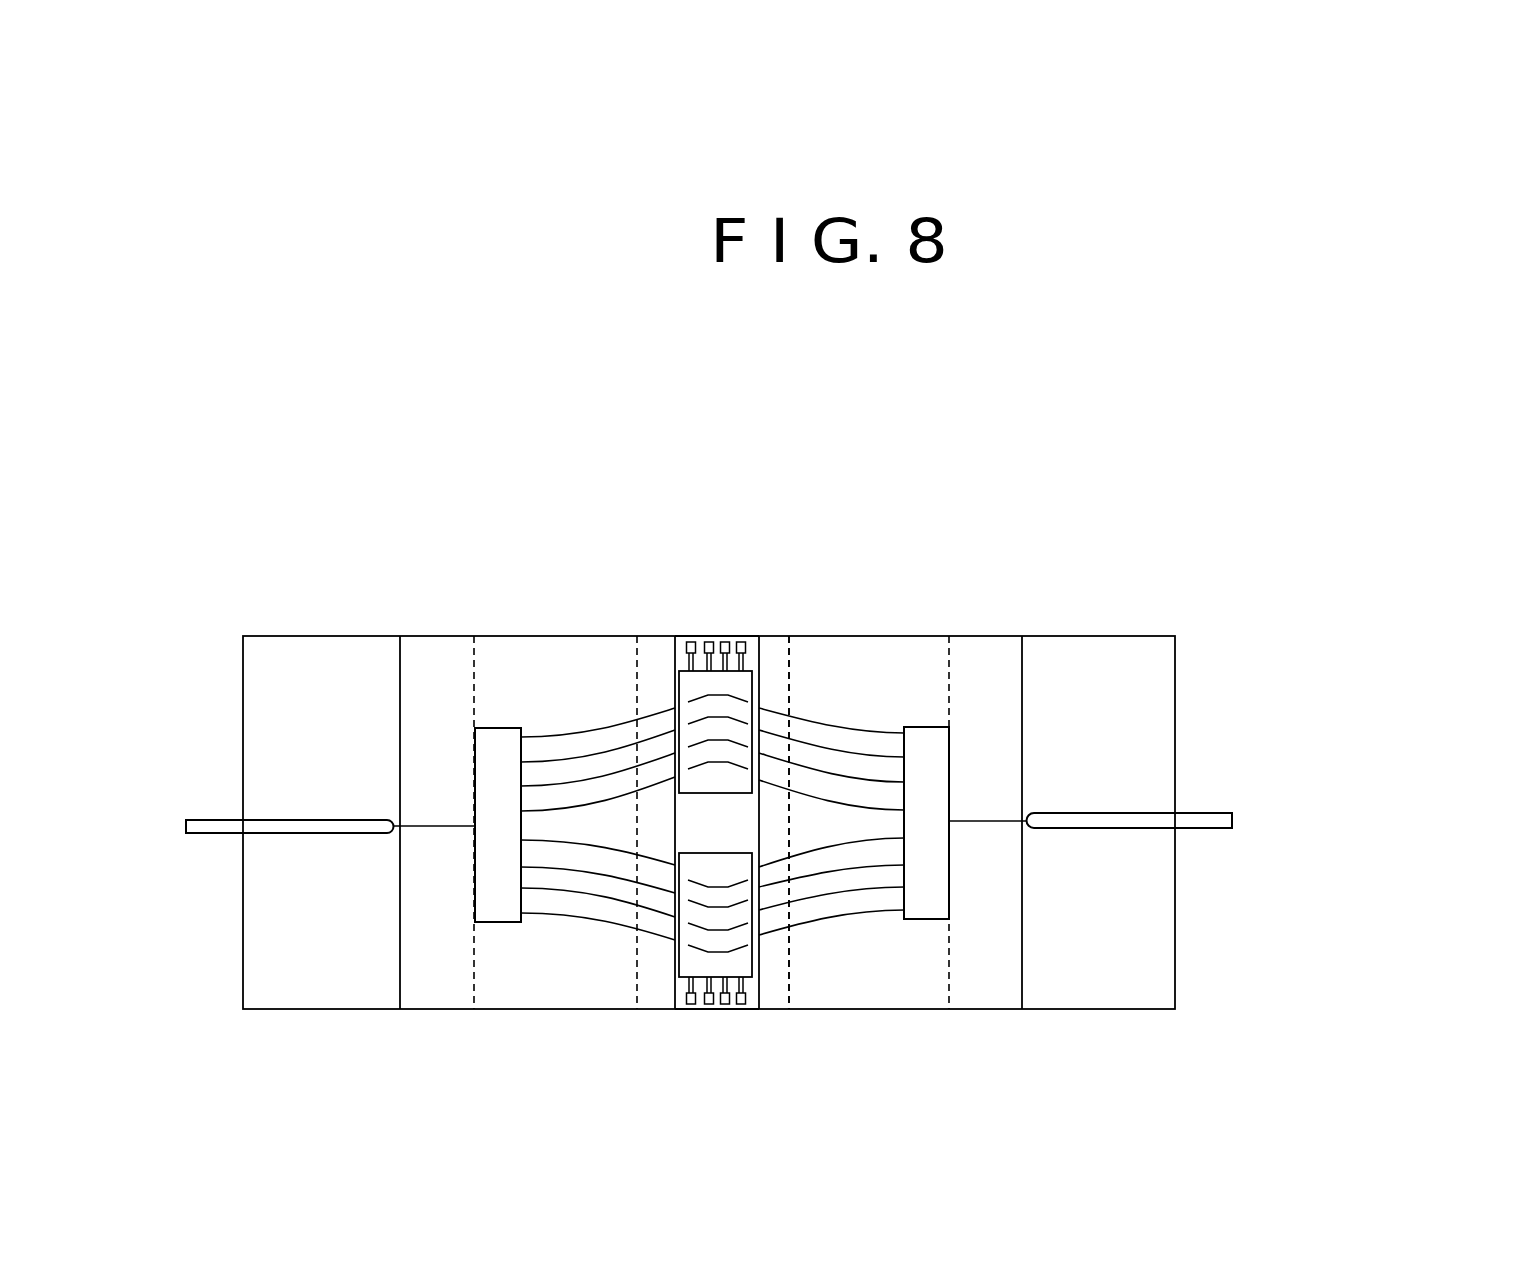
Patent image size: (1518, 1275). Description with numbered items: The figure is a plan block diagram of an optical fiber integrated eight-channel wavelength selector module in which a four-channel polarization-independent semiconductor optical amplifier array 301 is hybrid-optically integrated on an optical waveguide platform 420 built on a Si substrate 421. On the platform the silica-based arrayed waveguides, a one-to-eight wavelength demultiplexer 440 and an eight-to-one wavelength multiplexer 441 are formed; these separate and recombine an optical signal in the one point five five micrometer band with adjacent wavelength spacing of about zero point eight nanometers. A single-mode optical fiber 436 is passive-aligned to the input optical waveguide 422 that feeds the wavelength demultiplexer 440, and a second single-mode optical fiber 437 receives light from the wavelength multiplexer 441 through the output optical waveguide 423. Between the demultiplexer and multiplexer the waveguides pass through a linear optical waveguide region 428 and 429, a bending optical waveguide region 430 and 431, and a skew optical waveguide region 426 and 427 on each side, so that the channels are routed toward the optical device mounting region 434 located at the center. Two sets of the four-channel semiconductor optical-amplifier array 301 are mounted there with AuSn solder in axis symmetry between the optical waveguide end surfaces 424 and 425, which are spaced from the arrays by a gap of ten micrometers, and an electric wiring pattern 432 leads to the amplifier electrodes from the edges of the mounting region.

The four-channel semiconductor optical-amplifier array 301 is at (756, 670).
The optical waveguide platform 420 is at (952, 1013).
The Si substrate 421 is at (1147, 692).
The input optical waveguide 422 is at (443, 867).
The output optical waveguide 423 is at (982, 843).
The optical waveguide facet 424 is at (673, 636).
The optical waveguide facet 425 is at (760, 690).
The skew optical waveguide region 426 is at (657, 657).
The skew optical waveguide region 427 is at (783, 693).
The linear optical waveguide region 428 is at (497, 657).
The linear optical waveguide region 429 is at (910, 687).
The bending optical waveguide region 430 is at (578, 663).
The bending optical waveguide region 431 is at (877, 678).
The electric wiring pattern 432 is at (687, 982).
The device mounting region 434 is at (708, 636).
The single-mode optical fiber 436 is at (217, 835).
The single-mode optical fiber 437 is at (1200, 828).
The wavelength demultiplexer 440 is at (487, 757).
The wavelength multiplexer 441 is at (927, 770).